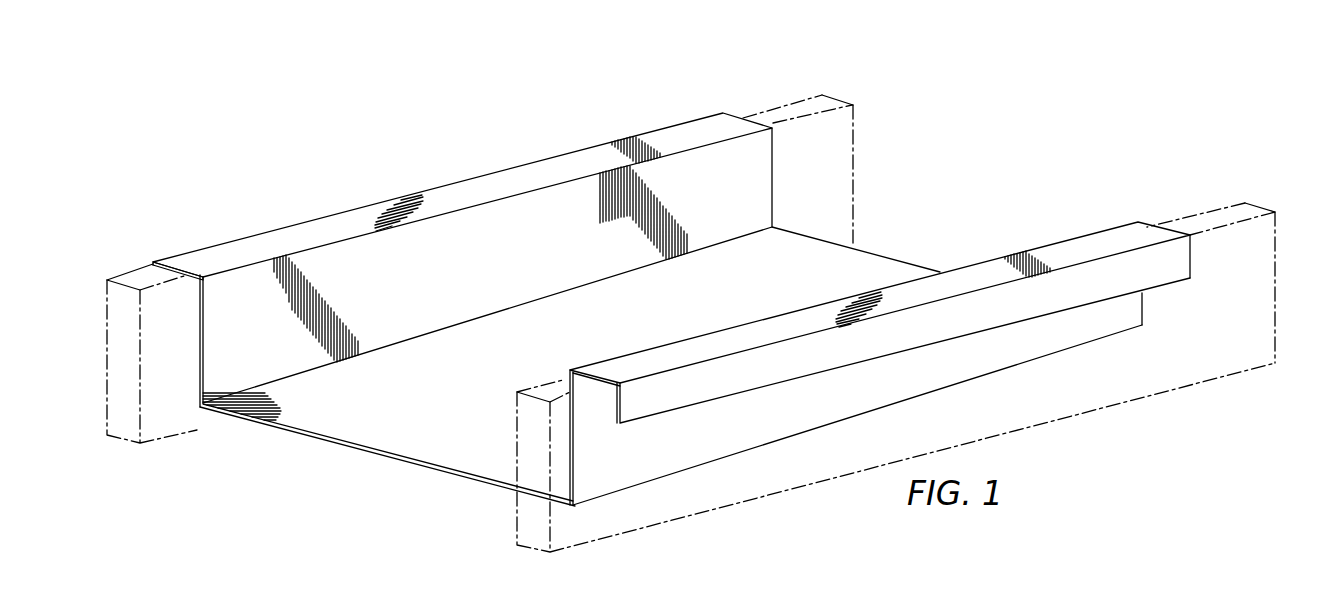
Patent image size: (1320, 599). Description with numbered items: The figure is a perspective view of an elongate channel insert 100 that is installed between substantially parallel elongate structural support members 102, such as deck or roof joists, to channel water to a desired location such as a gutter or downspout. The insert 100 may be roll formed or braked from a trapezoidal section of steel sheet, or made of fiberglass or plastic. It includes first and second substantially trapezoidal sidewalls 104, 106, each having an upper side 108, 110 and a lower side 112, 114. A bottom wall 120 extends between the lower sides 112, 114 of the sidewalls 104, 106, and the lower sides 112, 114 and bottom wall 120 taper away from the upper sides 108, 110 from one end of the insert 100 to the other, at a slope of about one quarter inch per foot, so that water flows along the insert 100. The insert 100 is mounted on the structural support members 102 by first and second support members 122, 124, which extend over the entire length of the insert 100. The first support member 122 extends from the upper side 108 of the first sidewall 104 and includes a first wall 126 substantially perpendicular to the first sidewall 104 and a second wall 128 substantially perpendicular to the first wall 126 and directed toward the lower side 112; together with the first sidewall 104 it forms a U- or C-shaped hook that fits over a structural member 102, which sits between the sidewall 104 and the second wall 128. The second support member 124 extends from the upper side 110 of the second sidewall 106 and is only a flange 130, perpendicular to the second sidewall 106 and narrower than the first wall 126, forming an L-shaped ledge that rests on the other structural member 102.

The channel insert 100 is at (377, 147).
The structural support members 102 is at (140, 275).
The first sidewall 104 is at (615, 475).
The second sidewall 106 is at (515, 282).
The upper side of first sidewall 108 is at (800, 307).
The upper side of second sidewall 110 is at (502, 193).
The lower side of first sidewall 112 is at (867, 413).
The lower side of second sidewall 114 is at (420, 332).
The bottom wall 120 is at (385, 438).
The first support member 122 is at (1202, 257).
The second support member 124 is at (735, 112).
The first wall 126 is at (992, 267).
The second wall 128 is at (1153, 275).
The flange 130 is at (225, 250).